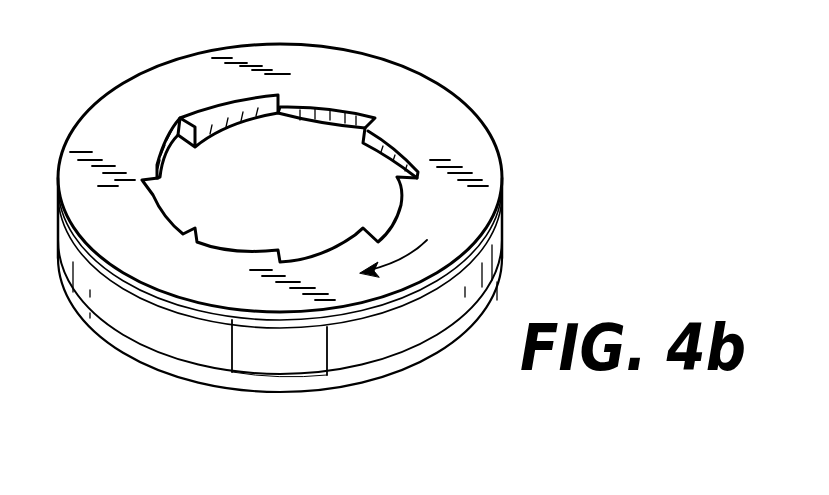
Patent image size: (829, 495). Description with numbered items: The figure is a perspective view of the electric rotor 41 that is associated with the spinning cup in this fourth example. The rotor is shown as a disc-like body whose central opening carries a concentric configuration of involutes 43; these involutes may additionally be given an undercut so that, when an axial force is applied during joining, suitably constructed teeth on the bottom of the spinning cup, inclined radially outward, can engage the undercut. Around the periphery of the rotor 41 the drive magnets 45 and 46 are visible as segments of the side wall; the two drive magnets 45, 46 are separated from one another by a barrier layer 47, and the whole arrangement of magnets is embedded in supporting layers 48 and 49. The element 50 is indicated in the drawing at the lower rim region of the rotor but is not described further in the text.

The electric rotor 41 is at (508, 224).
The involutes 43 is at (397, 143).
The drive magnet 45 is at (360, 347).
The drive magnet 46 is at (201, 348).
The barrier layer 47 is at (270, 358).
The supporting layer 48 is at (327, 383).
The supporting layer 49 is at (455, 258).
The rim edge 50 is at (390, 308).